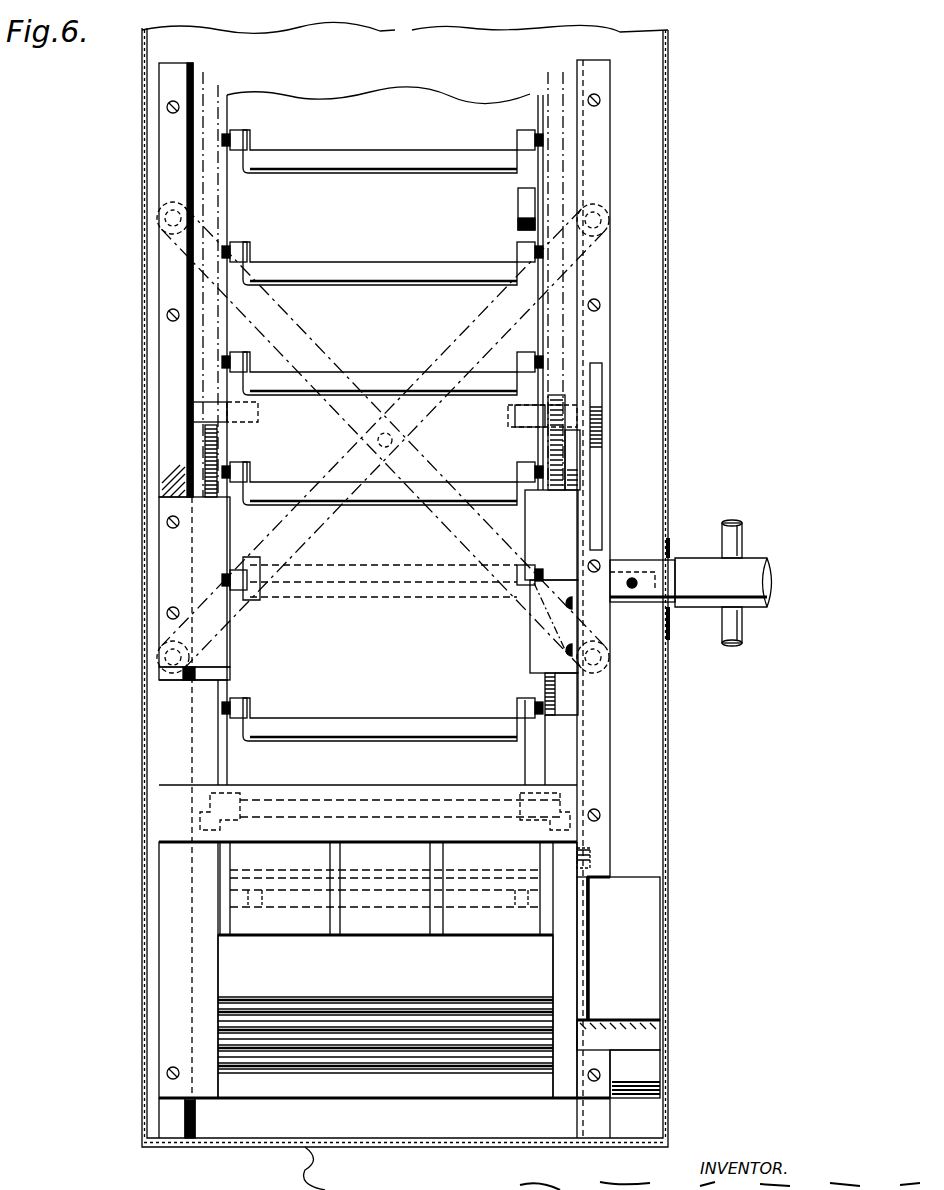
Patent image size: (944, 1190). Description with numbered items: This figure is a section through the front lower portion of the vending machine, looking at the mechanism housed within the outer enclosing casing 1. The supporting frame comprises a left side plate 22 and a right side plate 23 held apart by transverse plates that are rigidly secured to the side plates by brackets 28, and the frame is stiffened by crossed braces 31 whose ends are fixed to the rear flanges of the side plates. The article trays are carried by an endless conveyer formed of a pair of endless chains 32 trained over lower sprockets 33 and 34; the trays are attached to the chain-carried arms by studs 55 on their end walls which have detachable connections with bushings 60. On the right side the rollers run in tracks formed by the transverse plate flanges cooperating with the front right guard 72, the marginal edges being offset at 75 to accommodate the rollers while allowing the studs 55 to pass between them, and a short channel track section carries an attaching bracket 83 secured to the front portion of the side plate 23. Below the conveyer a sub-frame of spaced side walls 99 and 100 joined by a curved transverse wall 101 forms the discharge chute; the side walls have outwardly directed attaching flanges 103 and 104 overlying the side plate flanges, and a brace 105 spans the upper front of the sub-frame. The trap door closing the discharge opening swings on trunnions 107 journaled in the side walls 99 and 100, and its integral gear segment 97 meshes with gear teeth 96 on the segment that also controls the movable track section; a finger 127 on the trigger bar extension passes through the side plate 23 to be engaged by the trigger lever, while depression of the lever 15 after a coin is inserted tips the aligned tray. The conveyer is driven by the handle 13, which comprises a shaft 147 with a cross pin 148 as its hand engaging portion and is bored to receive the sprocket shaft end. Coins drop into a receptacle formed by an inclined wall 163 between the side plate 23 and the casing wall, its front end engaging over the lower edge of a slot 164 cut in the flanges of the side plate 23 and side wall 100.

The outer enclosing casing 1 is at (660, 292).
The handle 13 is at (693, 545).
The lever 15 is at (602, 386).
The left side plate 22 is at (187, 172).
The right side plate 23 is at (580, 184).
The brackets 28 is at (190, 410).
The crossed braces 31 is at (200, 240).
The endless chains 32 is at (219, 106).
The lower sprocket 33 is at (580, 466).
The lower sprocket 34 is at (296, 517).
The studs 55 is at (244, 700).
The bushings 60 is at (240, 470).
The front right guard 72 is at (165, 549).
The offset 75 is at (533, 192).
The attaching bracket 83 is at (580, 629).
The gear teeth 96 is at (545, 688).
The gear segment 97 is at (548, 752).
The side wall 99 is at (230, 978).
The side wall 100 is at (552, 969).
The transverse wall 101 is at (412, 1050).
The lateral attaching flange 103 is at (200, 1012).
The lateral attaching flange 104 is at (566, 1021).
The brace 105 is at (402, 762).
The trunnions 107 is at (220, 816).
The finger 127 is at (590, 848).
The shaft 147 is at (746, 571).
The cross pin 148 is at (746, 623).
The inclined wall 163 is at (640, 945).
The slot 164 is at (590, 948).